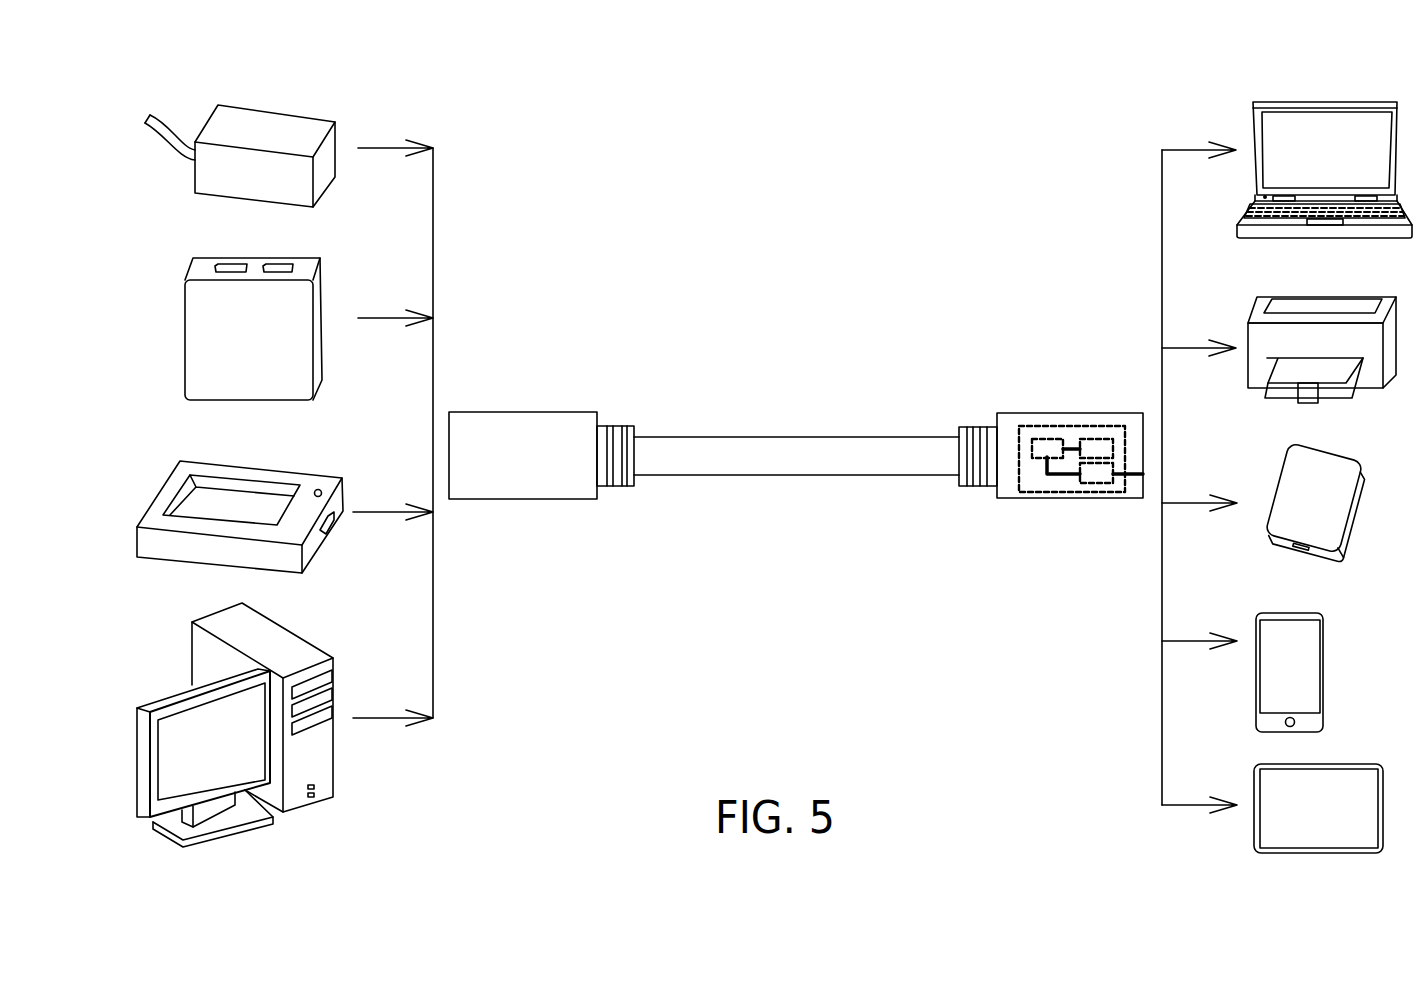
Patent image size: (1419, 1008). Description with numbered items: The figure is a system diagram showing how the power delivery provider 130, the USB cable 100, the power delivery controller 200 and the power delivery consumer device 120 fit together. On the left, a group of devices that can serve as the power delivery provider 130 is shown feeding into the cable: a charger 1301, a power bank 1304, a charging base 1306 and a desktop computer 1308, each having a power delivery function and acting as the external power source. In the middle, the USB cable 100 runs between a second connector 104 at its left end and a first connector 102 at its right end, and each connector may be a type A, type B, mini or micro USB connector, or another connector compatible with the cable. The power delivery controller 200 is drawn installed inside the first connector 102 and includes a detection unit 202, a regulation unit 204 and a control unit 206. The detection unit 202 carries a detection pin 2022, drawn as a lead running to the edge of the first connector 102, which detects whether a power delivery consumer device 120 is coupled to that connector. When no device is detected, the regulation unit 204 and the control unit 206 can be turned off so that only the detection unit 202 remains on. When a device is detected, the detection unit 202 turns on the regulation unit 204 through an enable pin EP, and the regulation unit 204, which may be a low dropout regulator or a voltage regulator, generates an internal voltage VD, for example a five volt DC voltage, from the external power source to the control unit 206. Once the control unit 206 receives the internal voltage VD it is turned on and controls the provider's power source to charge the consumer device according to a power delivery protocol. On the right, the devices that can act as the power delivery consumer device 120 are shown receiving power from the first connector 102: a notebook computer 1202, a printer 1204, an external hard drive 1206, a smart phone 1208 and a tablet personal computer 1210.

The USB cable 100 is at (877, 337).
The first connector 102 is at (997, 417).
The second connector 104 is at (521, 412).
The power delivery consumer device 120 is at (1133, 112).
The power delivery provider 130 is at (473, 112).
The power delivery controller 200 is at (1033, 493).
The detection unit 202 is at (1090, 484).
The regulation unit 204 is at (1033, 438).
The control unit 206 is at (1101, 438).
The detection pin 2022 is at (1135, 475).
The enable pin EP is at (1046, 466).
The internal voltage VD is at (1071, 448).
The notebook computer 1202 is at (1325, 102).
The printer 1204 is at (1322, 297).
The external hard drive 1206 is at (1346, 449).
The smart phone 1208 is at (1296, 613).
The tablet personal computer 1210 is at (1338, 764).
The charger 1301 is at (282, 114).
The power bank 1304 is at (302, 257).
The charging base 1306 is at (286, 470).
The desktop computer 1308 is at (290, 628).